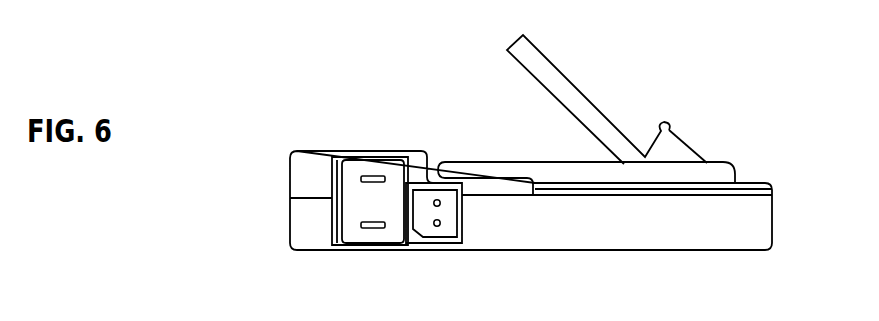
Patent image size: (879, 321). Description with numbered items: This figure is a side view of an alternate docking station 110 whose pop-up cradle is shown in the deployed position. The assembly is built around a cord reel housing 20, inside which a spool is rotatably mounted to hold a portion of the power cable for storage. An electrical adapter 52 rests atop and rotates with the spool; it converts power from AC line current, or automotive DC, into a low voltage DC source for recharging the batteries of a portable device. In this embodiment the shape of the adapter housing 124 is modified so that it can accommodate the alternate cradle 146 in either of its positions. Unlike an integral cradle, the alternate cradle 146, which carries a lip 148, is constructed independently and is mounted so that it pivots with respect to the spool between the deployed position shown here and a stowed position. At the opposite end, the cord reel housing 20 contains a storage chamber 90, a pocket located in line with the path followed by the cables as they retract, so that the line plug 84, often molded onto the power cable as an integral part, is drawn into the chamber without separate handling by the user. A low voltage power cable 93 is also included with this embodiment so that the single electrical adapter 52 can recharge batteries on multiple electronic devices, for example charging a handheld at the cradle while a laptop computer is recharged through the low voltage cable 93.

The alternate docking station 110 is at (267, 175).
The cord reel housing 20 is at (590, 223).
The electrical adapter 52 is at (715, 173).
The line plug 84 is at (357, 215).
The storage chamber 90 is at (415, 238).
The low voltage power cable 93 is at (442, 212).
The adapter housing 124 is at (573, 173).
The alternate cradle 146 is at (682, 152).
The lip 148 is at (668, 125).